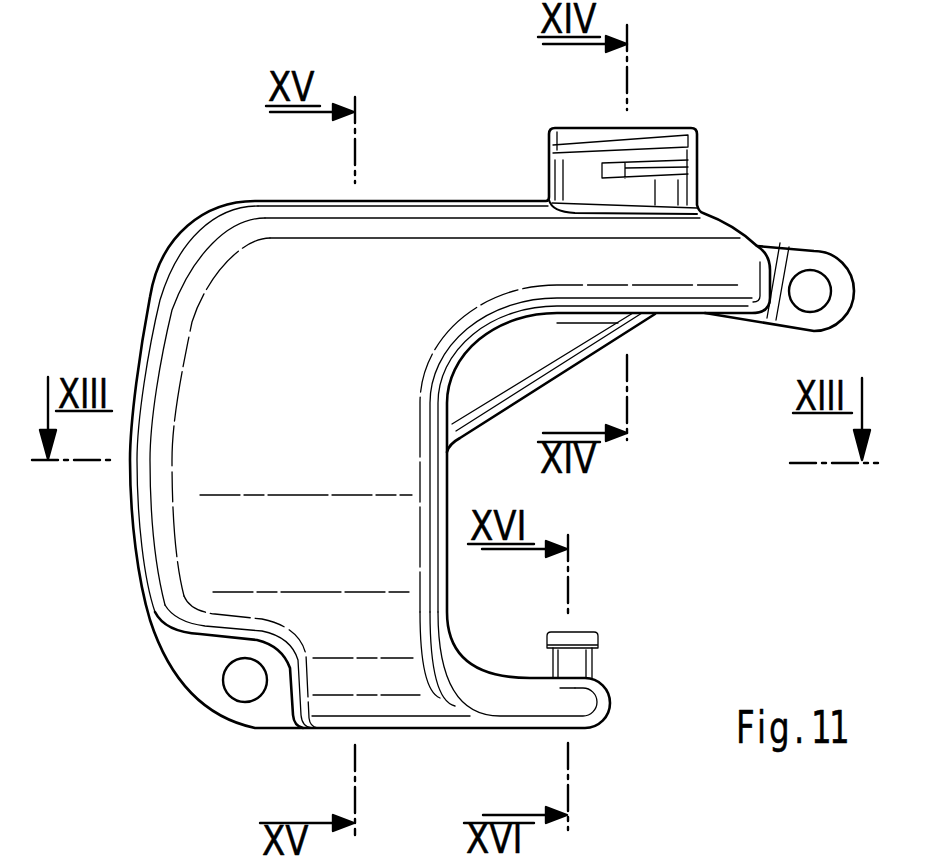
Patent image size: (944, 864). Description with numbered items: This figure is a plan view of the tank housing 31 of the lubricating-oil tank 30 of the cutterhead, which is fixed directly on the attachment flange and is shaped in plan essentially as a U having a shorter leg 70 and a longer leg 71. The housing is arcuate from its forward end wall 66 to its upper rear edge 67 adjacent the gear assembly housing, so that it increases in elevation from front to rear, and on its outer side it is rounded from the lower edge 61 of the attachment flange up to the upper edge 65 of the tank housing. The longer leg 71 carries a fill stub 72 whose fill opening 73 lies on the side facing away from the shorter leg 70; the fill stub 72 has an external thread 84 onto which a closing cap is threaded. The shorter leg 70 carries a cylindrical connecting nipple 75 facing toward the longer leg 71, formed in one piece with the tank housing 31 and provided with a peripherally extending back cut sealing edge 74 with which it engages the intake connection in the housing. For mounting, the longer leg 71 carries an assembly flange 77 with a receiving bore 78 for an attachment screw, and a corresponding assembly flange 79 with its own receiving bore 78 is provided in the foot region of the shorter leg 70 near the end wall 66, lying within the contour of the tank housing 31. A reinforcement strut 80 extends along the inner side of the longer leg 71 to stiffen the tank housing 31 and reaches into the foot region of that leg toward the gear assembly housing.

The lubricating-oil tank 30 is at (180, 205).
The tank housing 31 is at (326, 388).
The lower edge 61 is at (405, 731).
The upper edge 65 is at (432, 200).
The end wall 66 is at (135, 538).
The upper rear edge 67 is at (440, 590).
The shorter leg 70 is at (586, 710).
The longer leg 71 is at (722, 250).
The fill stub 72 is at (685, 188).
The fill opening 73 is at (680, 127).
The sealing edge 74 is at (598, 637).
The connecting nipple 75 is at (586, 661).
The assembly flange 77 is at (848, 293).
The receiving bore 78 is at (812, 290).
The assembly flange 79 is at (187, 662).
The reinforcement strut 80 is at (473, 400).
The external thread 84 is at (585, 147).